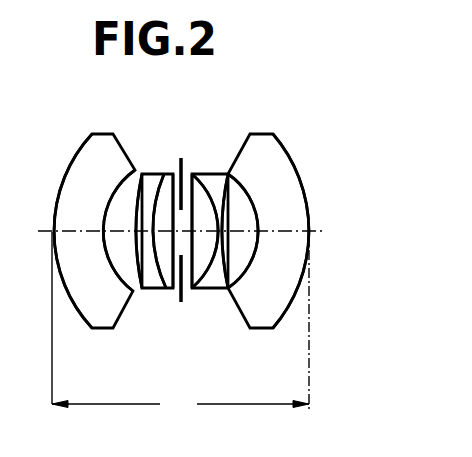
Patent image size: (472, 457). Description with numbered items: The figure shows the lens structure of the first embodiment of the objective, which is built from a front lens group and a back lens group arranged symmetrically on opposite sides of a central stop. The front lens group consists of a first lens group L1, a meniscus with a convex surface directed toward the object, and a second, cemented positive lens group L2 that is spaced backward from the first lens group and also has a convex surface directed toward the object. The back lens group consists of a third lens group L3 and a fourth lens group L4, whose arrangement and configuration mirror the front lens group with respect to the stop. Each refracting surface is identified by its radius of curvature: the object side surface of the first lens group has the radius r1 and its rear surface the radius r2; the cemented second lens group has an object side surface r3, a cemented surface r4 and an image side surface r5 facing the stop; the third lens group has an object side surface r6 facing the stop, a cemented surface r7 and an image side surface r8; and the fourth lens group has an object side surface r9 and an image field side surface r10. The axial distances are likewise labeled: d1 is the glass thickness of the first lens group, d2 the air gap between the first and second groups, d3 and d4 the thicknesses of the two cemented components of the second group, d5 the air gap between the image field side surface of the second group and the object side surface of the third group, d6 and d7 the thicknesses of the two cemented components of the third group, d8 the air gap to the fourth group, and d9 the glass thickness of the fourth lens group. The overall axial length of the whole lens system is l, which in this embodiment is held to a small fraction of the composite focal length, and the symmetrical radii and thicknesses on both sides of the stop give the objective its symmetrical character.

The radius of curvature of the object side surface of the first lens group r1 is at (69, 166).
The radius of curvature of the second lens surface r2 is at (119, 167).
The radius of curvature of the third lens surface r3 is at (139, 176).
The radius of curvature of the fourth lens surface r4 is at (162, 176).
The radius of curvature of the fifth lens surface r5 is at (174, 176).
The radius of curvature of the sixth lens surface r6 is at (208, 176).
The radius of curvature of the seventh lens surface r7 is at (219, 176).
The radius of curvature of the eighth lens surface r8 is at (229, 179).
The radius of curvature of the ninth lens surface r9 is at (250, 164).
The radius of curvature of the image field side surface of the fourth lens group r10 is at (284, 150).
The glass thickness of the first lens group d1 is at (93, 220).
The air gap between the first and second lens groups d2 is at (138, 289).
The axial thickness of the first component lens of the second lens group d3 is at (149, 288).
The axial thickness of the second component lens of the second lens group d4 is at (158, 220).
The air gap between the second and third lens groups d5 is at (187, 289).
The axial thickness of the first component lens of the third lens group d6 is at (212, 289).
The axial thickness of the second component lens of the third lens group d7 is at (223, 289).
The air gap between the third and fourth lens groups d8 is at (240, 238).
The glass thickness of the fourth lens group d9 is at (280, 220).
The first lens group L1 is at (101, 329).
The second lens group L2 is at (174, 289).
The third lens group L3 is at (225, 305).
The fourth lens group L4 is at (259, 329).
The axial length of the whole lens system l is at (180, 326).